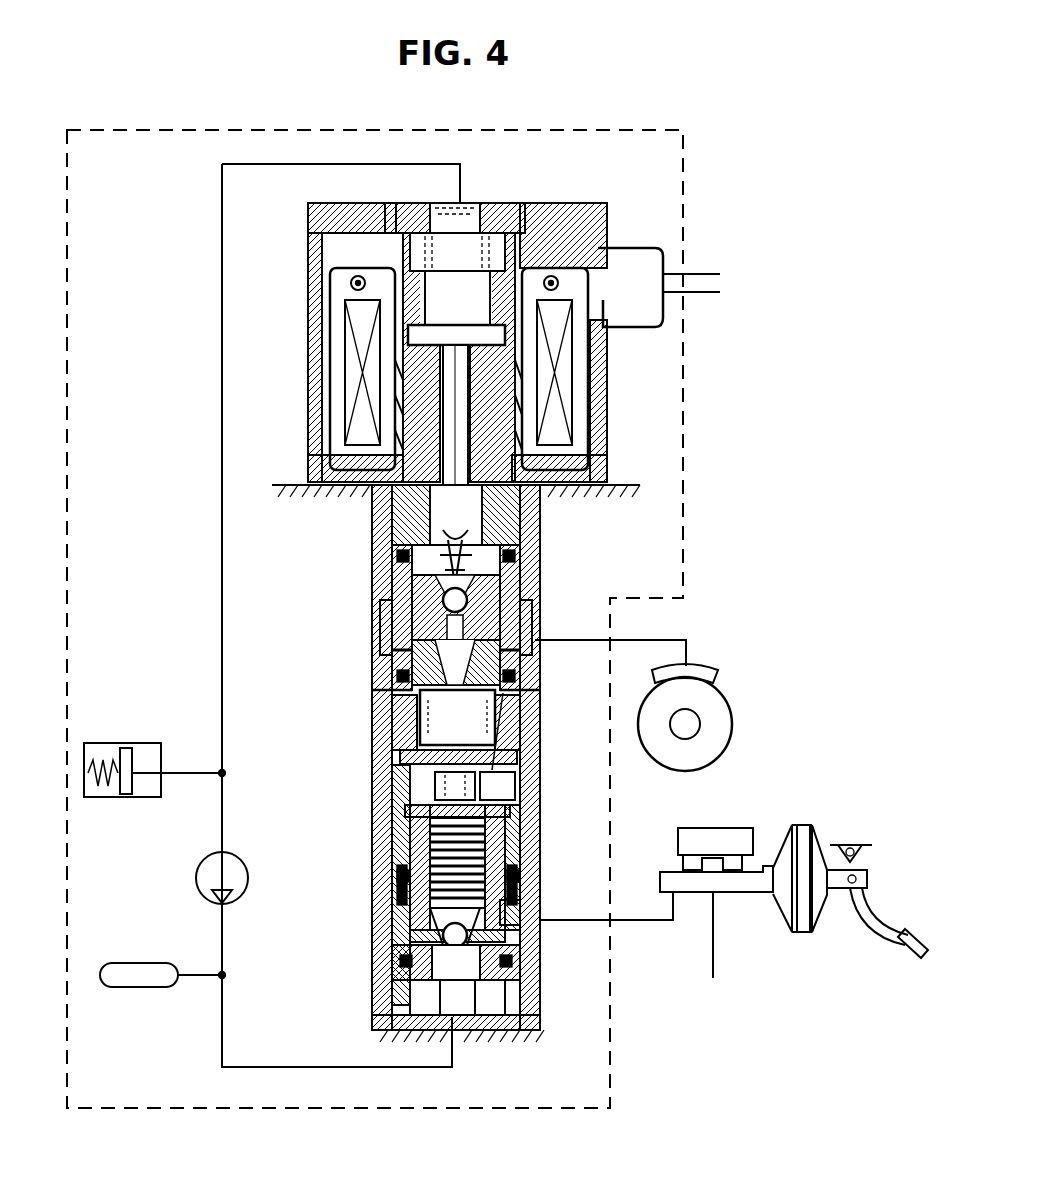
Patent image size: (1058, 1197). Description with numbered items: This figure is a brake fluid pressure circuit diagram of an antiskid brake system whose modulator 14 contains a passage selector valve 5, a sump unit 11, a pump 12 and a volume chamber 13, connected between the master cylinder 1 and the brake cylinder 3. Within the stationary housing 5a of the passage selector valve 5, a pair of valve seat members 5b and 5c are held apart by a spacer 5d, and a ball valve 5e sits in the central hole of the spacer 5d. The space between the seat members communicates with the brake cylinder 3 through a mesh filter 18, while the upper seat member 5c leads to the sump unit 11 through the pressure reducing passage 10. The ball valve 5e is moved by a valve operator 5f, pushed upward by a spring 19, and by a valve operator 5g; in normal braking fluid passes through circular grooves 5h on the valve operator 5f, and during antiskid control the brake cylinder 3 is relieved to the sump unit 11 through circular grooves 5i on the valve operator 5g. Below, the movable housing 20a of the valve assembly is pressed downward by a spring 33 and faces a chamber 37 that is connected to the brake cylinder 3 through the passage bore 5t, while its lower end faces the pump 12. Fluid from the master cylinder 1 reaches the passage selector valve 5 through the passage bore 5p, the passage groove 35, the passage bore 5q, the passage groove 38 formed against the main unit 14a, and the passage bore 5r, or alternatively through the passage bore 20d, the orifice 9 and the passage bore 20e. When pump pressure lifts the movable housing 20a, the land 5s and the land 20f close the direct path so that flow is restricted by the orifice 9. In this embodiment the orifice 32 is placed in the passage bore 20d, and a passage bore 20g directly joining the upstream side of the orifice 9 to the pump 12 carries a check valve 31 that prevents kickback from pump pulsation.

The master cylinder 1 is at (755, 893).
The brake cylinder 3 is at (718, 648).
The passage selector valve 5 is at (530, 616).
The stationary housing 5a is at (538, 563).
The valve seat member 5b is at (380, 690).
The valve seat member 5c is at (474, 555).
The spacer 5d is at (380, 590).
The ball valve 5e is at (535, 657).
The valve operator 5f is at (380, 648).
The valve operator 5g is at (536, 578).
The circular grooves 5h is at (457, 717).
The circular grooves 5i is at (463, 408).
The passage bore 5p is at (512, 938).
The passage bore 5q is at (405, 832).
The passage bore 5r is at (400, 757).
The land 5s is at (512, 882).
The passage bore 5t is at (520, 757).
The orifice 9 is at (405, 898).
The pressure reducing passage 10 is at (222, 648).
The sump unit 11 is at (108, 742).
The pump 12 is at (197, 870).
The volume chamber 13 is at (131, 992).
The modulator 14 is at (318, 1110).
The main unit 14a is at (630, 486).
The mesh filter 18 is at (380, 618).
The spring 19 is at (392, 720).
The movable housing 20a is at (405, 955).
The passage bore 20d is at (512, 965).
The passage bore 20e is at (515, 848).
The land 20f is at (405, 930).
The passage bore 20g is at (458, 1020).
The check valve 31 is at (446, 984).
The orifice 32 is at (512, 912).
The spring 33 is at (400, 782).
The passage groove 35 is at (405, 868).
The chamber 37 is at (512, 784).
The passage groove 38 is at (400, 808).